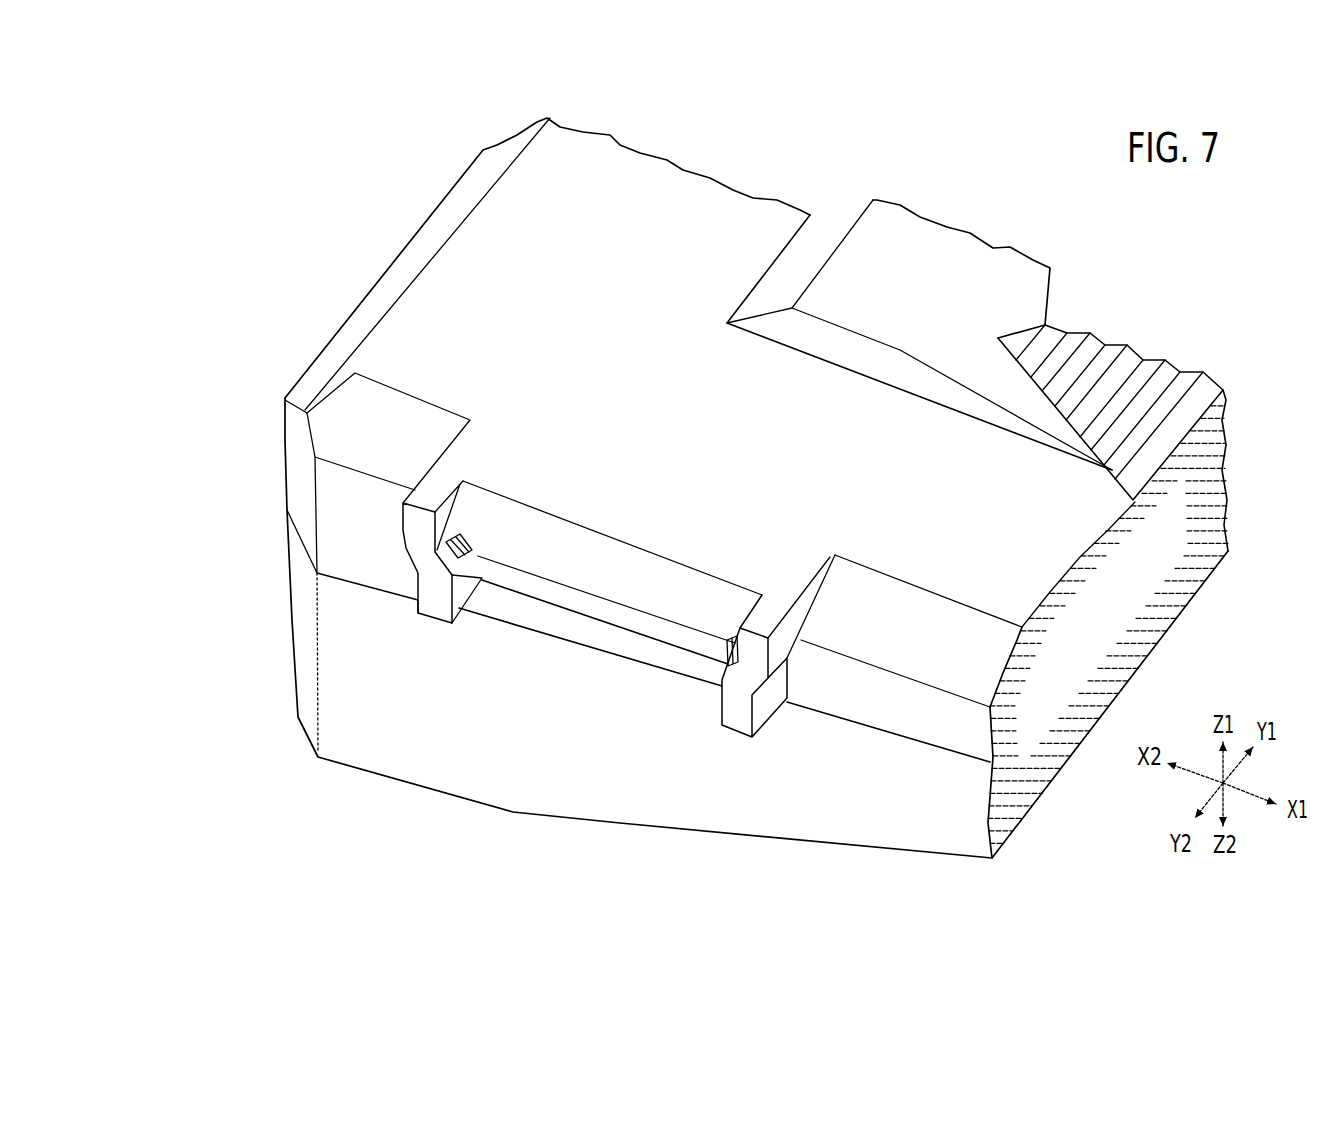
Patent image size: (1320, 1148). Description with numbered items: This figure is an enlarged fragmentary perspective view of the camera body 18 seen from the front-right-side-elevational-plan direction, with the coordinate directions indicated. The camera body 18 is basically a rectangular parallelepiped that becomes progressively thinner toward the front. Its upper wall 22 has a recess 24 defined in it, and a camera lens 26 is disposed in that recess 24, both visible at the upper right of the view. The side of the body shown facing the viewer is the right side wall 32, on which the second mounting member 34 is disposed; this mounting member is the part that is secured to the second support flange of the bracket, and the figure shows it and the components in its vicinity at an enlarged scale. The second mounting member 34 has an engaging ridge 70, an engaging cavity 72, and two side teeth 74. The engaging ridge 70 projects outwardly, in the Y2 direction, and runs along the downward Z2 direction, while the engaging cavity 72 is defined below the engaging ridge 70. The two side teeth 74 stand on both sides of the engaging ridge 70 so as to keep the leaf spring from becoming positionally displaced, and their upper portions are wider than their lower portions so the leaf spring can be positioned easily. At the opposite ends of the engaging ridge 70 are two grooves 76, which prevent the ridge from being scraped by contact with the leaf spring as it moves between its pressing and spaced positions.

The camera body 18 is at (1082, 194).
The upper wall 22 is at (482, 273).
The recess 24 is at (1130, 357).
The camera lens 26 is at (1028, 325).
The right side wall 32 is at (578, 802).
The second mounting member 34 is at (425, 642).
The engaging ridge 70 is at (577, 600).
The engaging cavity 72 is at (540, 607).
The side teeth 74 is at (403, 528).
The grooves 76 is at (472, 552).